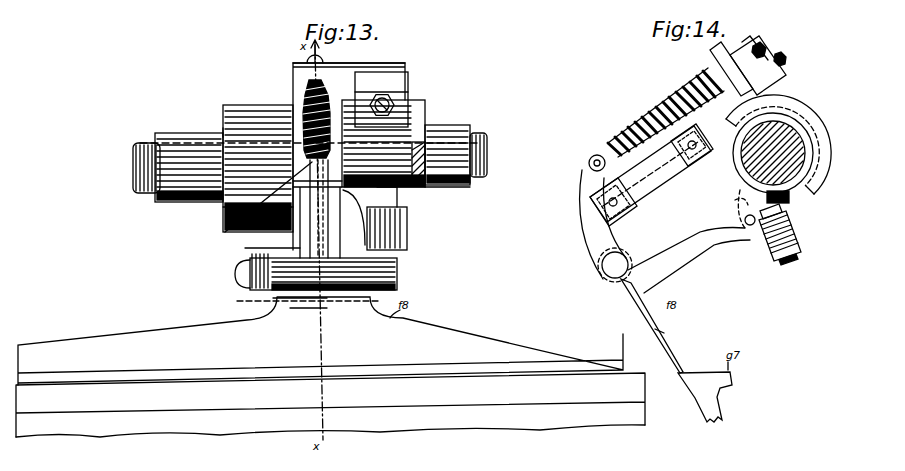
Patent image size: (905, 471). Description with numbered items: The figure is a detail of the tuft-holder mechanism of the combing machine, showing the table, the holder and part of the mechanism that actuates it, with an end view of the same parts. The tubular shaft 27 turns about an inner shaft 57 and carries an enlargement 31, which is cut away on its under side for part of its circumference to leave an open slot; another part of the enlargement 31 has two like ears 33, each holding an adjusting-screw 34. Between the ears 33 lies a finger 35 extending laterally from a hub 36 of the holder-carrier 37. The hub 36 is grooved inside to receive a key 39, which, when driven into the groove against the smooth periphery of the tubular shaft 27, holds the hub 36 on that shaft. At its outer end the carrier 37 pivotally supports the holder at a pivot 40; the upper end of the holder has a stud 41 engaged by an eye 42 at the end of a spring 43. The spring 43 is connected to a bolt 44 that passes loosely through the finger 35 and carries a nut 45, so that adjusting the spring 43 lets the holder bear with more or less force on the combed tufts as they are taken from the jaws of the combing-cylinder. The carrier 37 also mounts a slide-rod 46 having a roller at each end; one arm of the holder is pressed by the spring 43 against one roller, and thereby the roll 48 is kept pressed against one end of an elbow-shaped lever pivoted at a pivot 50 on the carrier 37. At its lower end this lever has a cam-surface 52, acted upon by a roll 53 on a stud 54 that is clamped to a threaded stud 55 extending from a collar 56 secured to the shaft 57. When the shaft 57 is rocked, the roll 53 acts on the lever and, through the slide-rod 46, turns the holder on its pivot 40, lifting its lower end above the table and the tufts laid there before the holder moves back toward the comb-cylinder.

In FIG. 13, the tubular shaft 27 is at (186, 133).
In FIG. 14, the tubular shaft 27 is at (735, 186).
In FIG. 13, the enlargement 31 is at (425, 122).
In FIG. 14, the enlargement 31 is at (803, 106).
In FIG. 13, the ears 33 is at (410, 100).
In FIG. 14, the ears 33 is at (717, 73).
In FIG. 13, the adjusting-screw 34 is at (390, 104).
In FIG. 14, the adjusting-screw 34 is at (675, 97).
In FIG. 13, the finger 35 is at (297, 84).
In FIG. 14, the finger 35 is at (736, 57).
In FIG. 13, the hub 36 is at (259, 200).
In FIG. 13, the holder-carrier 37 is at (240, 249).
In FIG. 14, the holder-carrier 37 is at (675, 244).
In FIG. 13, the key 39 is at (220, 130).
In FIG. 14, the pivot 40 is at (606, 267).
In FIG. 13, the stud 41 is at (222, 210).
In FIG. 14, the stud 41 is at (582, 172).
In FIG. 14, the eye 42 is at (589, 160).
In FIG. 14, the spring 43 is at (650, 122).
In FIG. 13, the bolt 44 is at (323, 78).
In FIG. 14, the bolt 44 is at (766, 50).
In FIG. 14, the nut 45 is at (748, 45).
In FIG. 14, the slide-rod 46 is at (689, 164).
In FIG. 13, the roll 48 is at (292, 98).
In FIG. 14, the pivot 50 is at (747, 226).
In FIG. 13, the cam-surface 52 is at (260, 271).
In FIG. 13, the roll 53 is at (292, 246).
In FIG. 13, the stud 54 is at (367, 226).
In FIG. 14, the stud 54 is at (762, 248).
In FIG. 13, the threaded stud 55 is at (402, 207).
In FIG. 14, the threaded stud 55 is at (790, 266).
In FIG. 13, the collar 56 is at (470, 190).
In FIG. 13, the shaft 57 is at (133, 172).
In FIG. 14, the shaft 57 is at (735, 200).